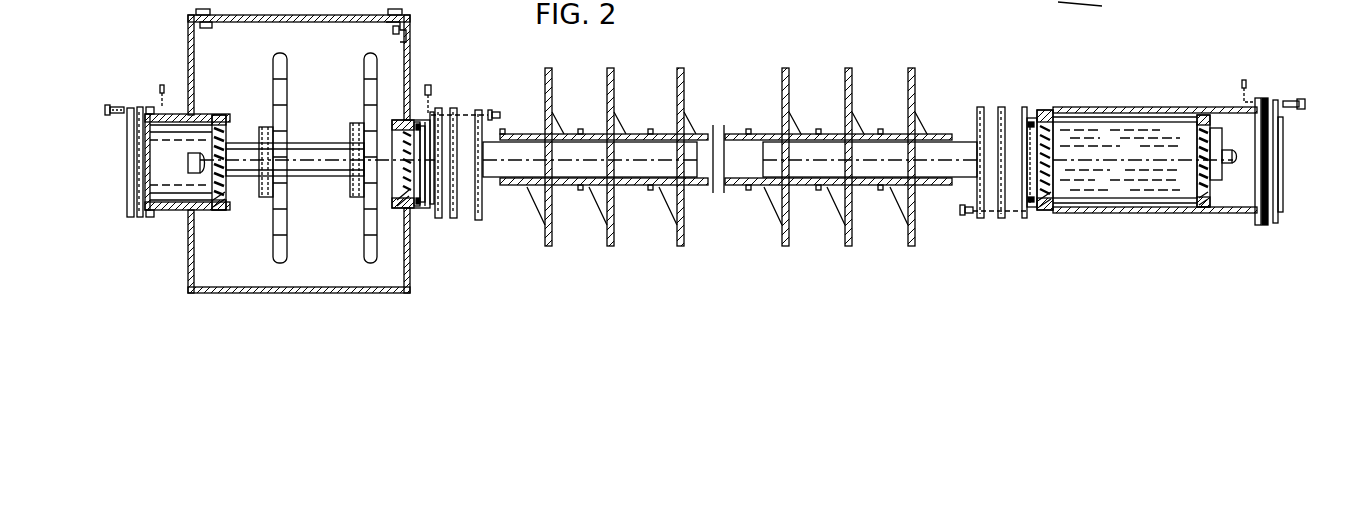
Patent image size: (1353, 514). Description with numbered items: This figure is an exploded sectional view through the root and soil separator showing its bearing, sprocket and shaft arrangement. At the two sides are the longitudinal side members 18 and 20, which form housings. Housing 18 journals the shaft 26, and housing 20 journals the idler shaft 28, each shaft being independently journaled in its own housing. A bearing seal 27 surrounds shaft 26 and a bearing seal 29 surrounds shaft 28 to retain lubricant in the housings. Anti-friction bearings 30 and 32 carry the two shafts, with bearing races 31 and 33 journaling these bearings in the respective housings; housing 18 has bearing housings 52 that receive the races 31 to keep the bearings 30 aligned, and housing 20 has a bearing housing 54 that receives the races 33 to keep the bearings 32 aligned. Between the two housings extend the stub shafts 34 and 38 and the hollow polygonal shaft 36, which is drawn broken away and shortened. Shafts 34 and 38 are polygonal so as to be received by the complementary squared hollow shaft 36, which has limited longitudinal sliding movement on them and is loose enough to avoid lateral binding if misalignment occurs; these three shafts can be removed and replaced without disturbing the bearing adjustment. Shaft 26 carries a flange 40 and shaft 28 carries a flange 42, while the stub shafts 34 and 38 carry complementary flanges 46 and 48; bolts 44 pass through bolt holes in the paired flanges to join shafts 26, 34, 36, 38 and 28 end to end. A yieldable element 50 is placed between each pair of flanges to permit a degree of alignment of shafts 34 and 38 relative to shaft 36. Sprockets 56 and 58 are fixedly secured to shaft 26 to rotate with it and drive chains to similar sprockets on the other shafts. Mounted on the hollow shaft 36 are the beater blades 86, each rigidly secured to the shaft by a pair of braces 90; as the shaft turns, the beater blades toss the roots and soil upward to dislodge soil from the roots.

The side member 18 is at (410, 253).
The side member 20 is at (1142, 212).
The shaft 26 is at (250, 174).
The bearing seal 27 is at (416, 200).
The shaft 28 is at (1090, 170).
The bearing seal 29 is at (1032, 115).
The anti-friction bearing 30 is at (228, 135).
The bearing race 31 is at (214, 208).
The anti-friction bearing 32 is at (1047, 122).
The bearing race 33 is at (1048, 208).
The stub shaft 34 is at (488, 180).
The hollow polygonal shaft 36 is at (736, 192).
The stub shaft 38 is at (966, 146).
The flange 40 is at (438, 108).
The flange 42 is at (1022, 107).
The bolt 44 is at (498, 112).
The flange 46 is at (477, 218).
The flange 48 is at (976, 192).
The yieldable element 50 is at (455, 110).
The bearing housing 52 is at (135, 160).
The bearing housing 54 is at (1283, 155).
The sprocket 56 is at (288, 86).
The sprocket 58 is at (372, 54).
The beater blade 86 is at (678, 227).
The brace 90 is at (552, 120).